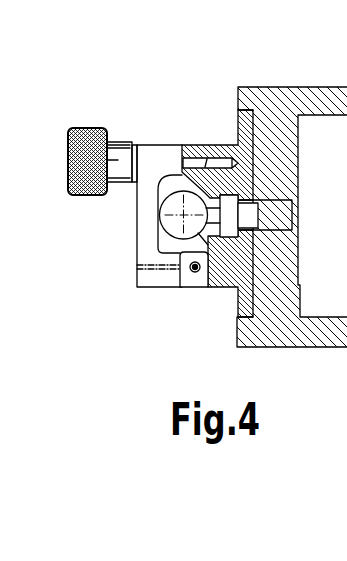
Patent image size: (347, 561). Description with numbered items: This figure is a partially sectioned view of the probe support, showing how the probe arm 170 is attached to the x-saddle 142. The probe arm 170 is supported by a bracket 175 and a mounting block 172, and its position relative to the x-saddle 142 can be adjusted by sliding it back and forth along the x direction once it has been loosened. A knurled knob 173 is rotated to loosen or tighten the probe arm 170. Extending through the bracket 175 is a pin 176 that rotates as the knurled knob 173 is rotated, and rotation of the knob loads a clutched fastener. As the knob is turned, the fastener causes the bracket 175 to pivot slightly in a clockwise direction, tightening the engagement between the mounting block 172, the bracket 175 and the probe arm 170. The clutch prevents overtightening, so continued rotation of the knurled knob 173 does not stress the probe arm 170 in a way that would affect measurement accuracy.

The x-saddle 142 is at (272, 103).
The probe arm 170 is at (152, 233).
The mounting block 172 is at (197, 145).
The knurled knob 173 is at (72, 167).
The bracket 175 is at (143, 253).
The pin 176 is at (213, 158).